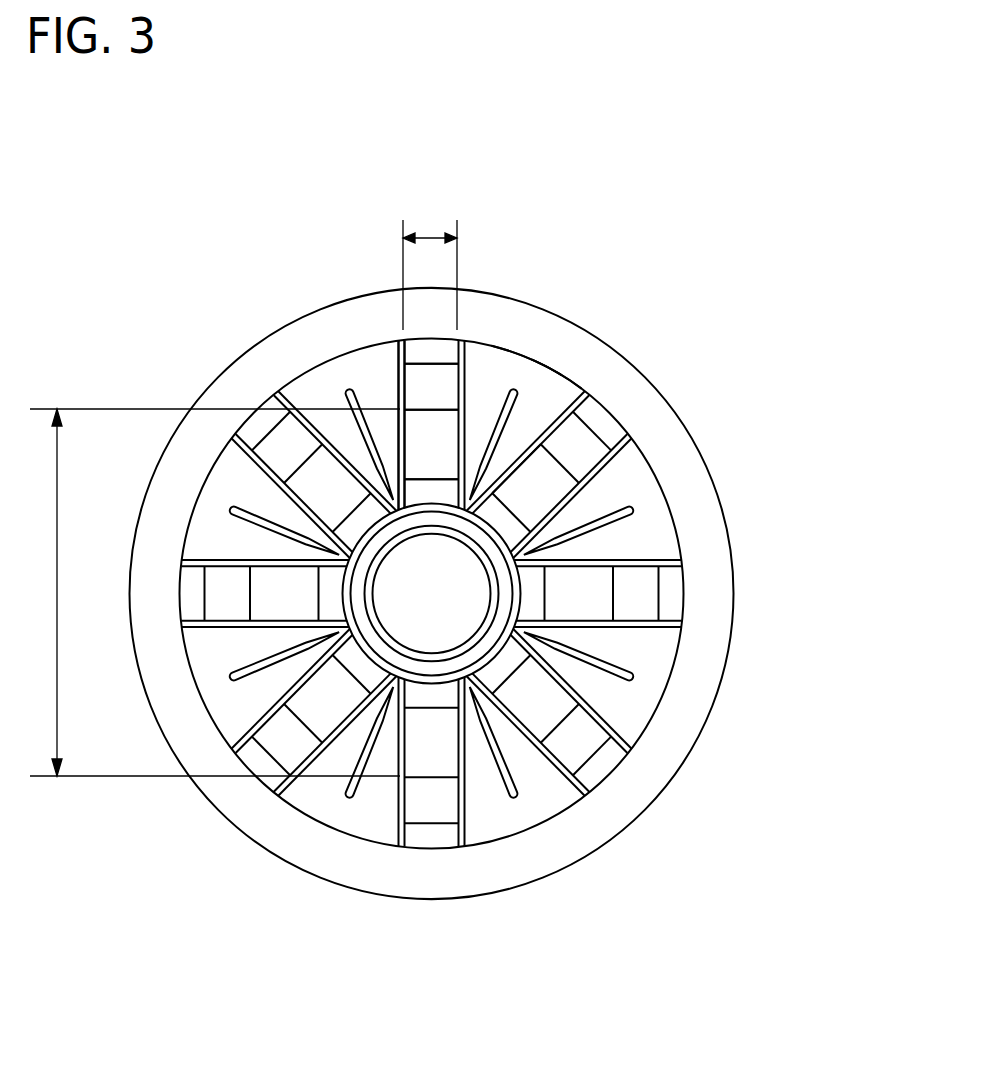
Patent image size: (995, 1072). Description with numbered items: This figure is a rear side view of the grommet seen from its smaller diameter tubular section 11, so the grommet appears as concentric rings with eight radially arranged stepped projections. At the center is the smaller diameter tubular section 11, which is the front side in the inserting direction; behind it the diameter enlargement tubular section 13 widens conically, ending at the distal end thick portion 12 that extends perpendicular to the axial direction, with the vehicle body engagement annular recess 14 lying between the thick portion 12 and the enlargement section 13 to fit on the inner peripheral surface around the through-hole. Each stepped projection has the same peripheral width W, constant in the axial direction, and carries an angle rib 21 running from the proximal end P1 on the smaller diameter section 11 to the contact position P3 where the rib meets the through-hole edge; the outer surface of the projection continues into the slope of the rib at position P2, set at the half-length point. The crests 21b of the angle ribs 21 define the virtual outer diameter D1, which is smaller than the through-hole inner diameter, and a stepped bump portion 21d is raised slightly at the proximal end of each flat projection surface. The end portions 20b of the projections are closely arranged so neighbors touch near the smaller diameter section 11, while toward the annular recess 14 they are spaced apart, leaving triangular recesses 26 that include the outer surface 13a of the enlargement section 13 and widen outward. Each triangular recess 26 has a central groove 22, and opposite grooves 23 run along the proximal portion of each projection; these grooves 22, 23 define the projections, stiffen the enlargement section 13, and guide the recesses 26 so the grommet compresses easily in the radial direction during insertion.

The smaller diameter tubular section 11 is at (582, 790).
The distal end thick portion 12 is at (735, 645).
The diameter enlargement tubular section 13 is at (600, 740).
The outer surface of the diameter enlargement tubular section 13a is at (550, 387).
The vehicle body engagement annular recess 14 is at (518, 350).
The end portions of the stepped projections 20b is at (483, 542).
The angle rib 21 is at (532, 450).
The crest 21b is at (400, 388).
The stepped bump portion 21d is at (510, 477).
The central groove 22 is at (580, 393).
The opposite grooves 23 is at (480, 363).
The triangular recess 26 is at (478, 358).
The proximal end P1 is at (422, 506).
The position P2 is at (417, 362).
The contact position P3 is at (416, 350).
The width W is at (430, 266).
The virtual outer diameter D1 is at (211, 592).